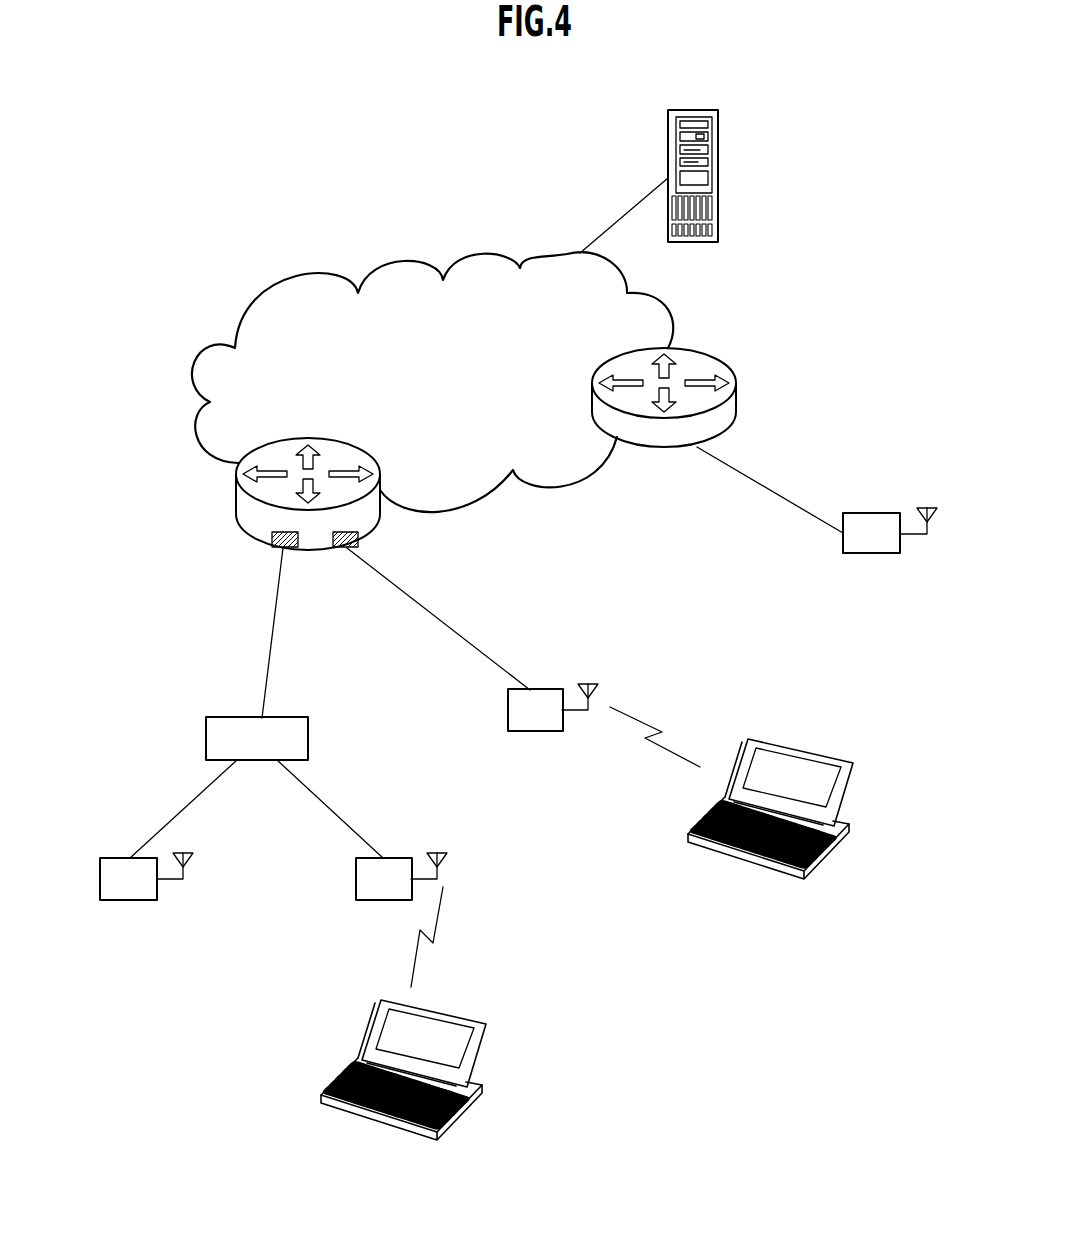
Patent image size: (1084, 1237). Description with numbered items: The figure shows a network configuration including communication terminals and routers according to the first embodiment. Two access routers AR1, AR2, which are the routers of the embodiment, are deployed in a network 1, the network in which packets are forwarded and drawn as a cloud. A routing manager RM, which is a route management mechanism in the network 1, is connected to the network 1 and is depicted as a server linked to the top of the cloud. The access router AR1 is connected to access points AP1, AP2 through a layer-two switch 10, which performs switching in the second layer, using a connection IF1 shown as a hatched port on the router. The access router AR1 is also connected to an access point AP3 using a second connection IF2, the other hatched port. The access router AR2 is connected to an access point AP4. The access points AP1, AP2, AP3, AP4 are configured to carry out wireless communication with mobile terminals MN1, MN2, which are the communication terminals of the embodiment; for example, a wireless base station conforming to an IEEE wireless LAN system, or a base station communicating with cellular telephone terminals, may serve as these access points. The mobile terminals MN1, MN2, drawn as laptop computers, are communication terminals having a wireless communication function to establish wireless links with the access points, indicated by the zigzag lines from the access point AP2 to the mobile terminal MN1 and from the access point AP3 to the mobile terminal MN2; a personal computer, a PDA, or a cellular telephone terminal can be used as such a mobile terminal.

The network 1 is at (403, 260).
The routing manager RM is at (692, 108).
The access router AR1 is at (309, 493).
The access router AR2 is at (720, 358).
The connection IF1 is at (252, 534).
The connection IF2 is at (355, 527).
The layer-2 switch 10 is at (205, 740).
The access point AP1 is at (130, 903).
The access point AP2 is at (370, 903).
The access point AP3 is at (536, 734).
The access point AP4 is at (870, 556).
The mobile terminal MN1 is at (483, 1050).
The mobile terminal MN2 is at (803, 748).